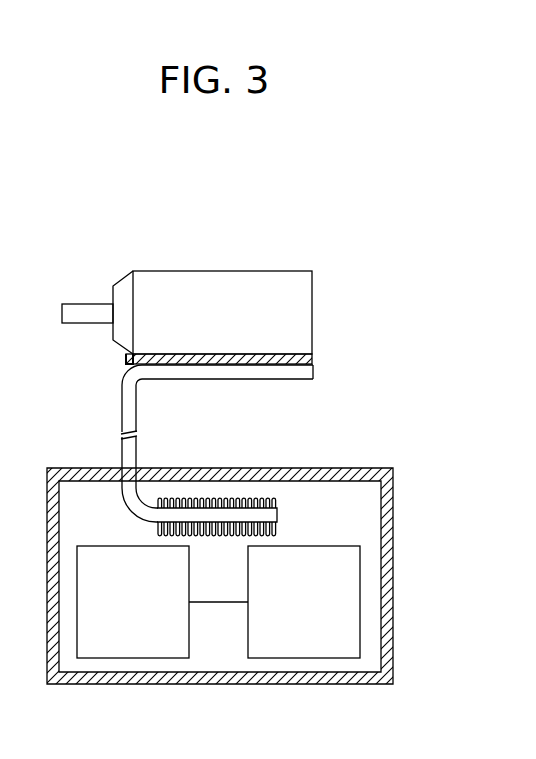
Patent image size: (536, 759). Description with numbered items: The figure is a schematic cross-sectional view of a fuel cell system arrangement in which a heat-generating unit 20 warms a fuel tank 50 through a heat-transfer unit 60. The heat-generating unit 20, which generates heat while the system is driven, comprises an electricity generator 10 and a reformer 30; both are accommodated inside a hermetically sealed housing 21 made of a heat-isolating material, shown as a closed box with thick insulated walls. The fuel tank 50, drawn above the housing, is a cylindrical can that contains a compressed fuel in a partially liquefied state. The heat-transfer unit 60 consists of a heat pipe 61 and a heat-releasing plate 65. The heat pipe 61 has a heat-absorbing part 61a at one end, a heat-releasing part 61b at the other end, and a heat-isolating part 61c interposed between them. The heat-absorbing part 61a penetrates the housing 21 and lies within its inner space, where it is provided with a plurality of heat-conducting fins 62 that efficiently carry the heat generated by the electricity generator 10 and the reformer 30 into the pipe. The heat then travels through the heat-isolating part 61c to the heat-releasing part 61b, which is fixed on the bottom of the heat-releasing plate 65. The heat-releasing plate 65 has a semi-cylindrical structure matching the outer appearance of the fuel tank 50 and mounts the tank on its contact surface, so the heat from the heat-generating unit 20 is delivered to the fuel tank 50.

The electricity generator 10 is at (307, 659).
The heat-generating unit 20 is at (252, 572).
The housing 21 is at (388, 570).
The reformer 30 is at (128, 659).
The fuel tank 50 is at (249, 269).
The heat-transfer unit 60 is at (316, 367).
The heat pipe 61 is at (183, 450).
The heat-absorbing part 61a is at (224, 482).
The heat-releasing part 61b is at (238, 372).
The heat-isolating part 61c is at (122, 455).
The heat-conducting fins 62 is at (273, 499).
The heat-releasing plate 65 is at (125, 360).